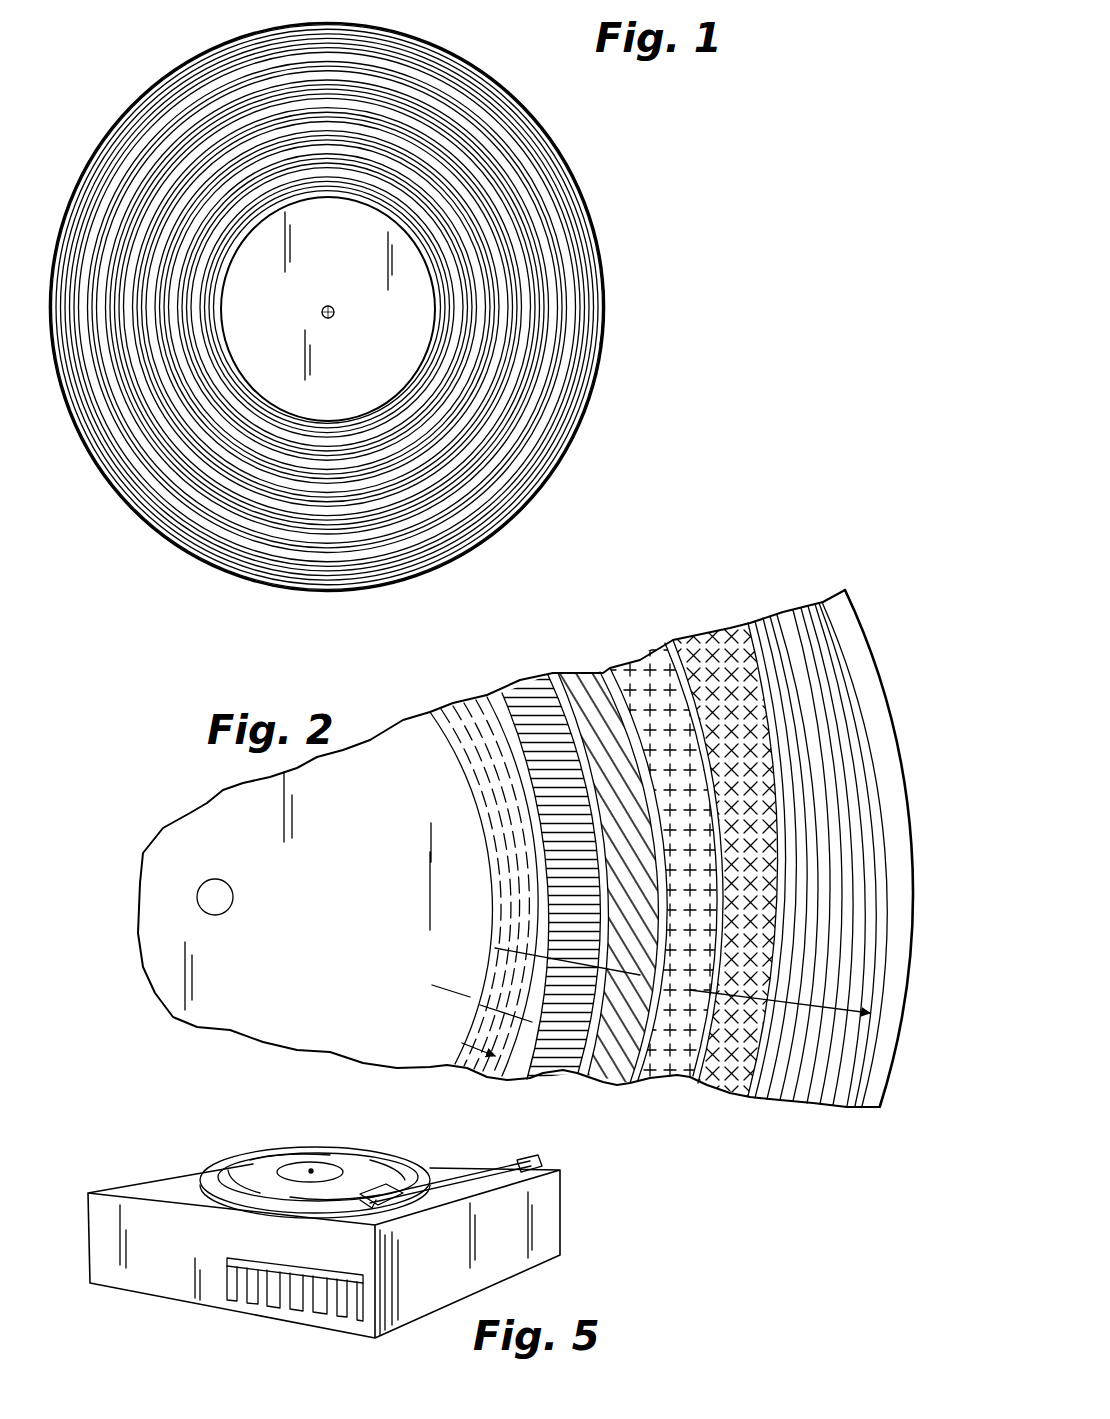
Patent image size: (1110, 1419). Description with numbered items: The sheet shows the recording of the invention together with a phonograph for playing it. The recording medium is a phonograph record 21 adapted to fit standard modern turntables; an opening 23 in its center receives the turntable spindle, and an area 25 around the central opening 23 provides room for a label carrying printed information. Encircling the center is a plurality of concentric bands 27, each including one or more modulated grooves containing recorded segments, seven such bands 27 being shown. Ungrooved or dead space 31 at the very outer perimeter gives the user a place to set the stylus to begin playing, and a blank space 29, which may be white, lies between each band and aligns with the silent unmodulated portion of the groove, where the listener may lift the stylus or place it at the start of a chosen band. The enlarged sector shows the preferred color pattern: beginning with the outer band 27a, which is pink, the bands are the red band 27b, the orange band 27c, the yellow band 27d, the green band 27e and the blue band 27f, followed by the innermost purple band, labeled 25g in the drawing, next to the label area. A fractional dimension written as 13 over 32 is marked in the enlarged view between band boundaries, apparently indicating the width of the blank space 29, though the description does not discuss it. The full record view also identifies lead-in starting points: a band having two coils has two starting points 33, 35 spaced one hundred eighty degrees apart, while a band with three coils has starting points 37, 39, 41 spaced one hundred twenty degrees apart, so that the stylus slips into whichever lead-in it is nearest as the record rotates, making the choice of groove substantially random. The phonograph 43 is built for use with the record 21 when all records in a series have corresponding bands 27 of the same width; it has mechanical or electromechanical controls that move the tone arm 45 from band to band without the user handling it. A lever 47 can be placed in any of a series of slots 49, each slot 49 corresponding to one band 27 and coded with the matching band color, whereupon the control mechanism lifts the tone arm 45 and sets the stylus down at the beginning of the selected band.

In FIG. 1, the phonograph record 21 is at (600, 217).
In FIG. 2, the phonograph record 21 is at (880, 1107).
In FIG. 5, the phonograph record 21 is at (277, 1150).
In FIG. 1, the central opening 23 is at (335, 315).
In FIG. 2, the central opening 23 is at (230, 890).
In FIG. 1, the label area 25 is at (340, 265).
In FIG. 2, the label area 25 is at (226, 1012).
In FIG. 2, the innermost band 25g is at (445, 707).
In FIG. 1, the concentric bands 27 is at (473, 143).
In FIG. 2, the outer band 27a is at (802, 610).
In FIG. 2, the red band 27b is at (750, 622).
In FIG. 2, the orange band 27c is at (693, 640).
In FIG. 2, the yellow band 27d is at (638, 668).
In FIG. 2, the green band 27e is at (582, 677).
In FIG. 2, the blue band 27f is at (518, 690).
In FIG. 2, the blank space 29 is at (505, 1076).
In FIG. 1, the dead space 31 is at (601, 346).
In FIG. 2, the dead space 31 is at (877, 690).
In FIG. 2, the dimension denominator 32 is at (578, 1072).
In FIG. 2, the dimension numerator 13 is at (621, 1038).
In FIG. 1, the starting point 33 is at (572, 315).
In FIG. 1, the starting point 35 is at (86, 318).
In FIG. 1, the starting point 37 is at (423, 133).
In FIG. 1, the starting point 39 is at (427, 486).
In FIG. 1, the starting point 41 is at (130, 312).
In FIG. 5, the phonograph 43 is at (568, 1216).
In FIG. 5, the tone arm 45 is at (457, 1180).
In FIG. 5, the lever 47 is at (353, 1302).
In FIG. 5, the slots 49 is at (273, 1270).